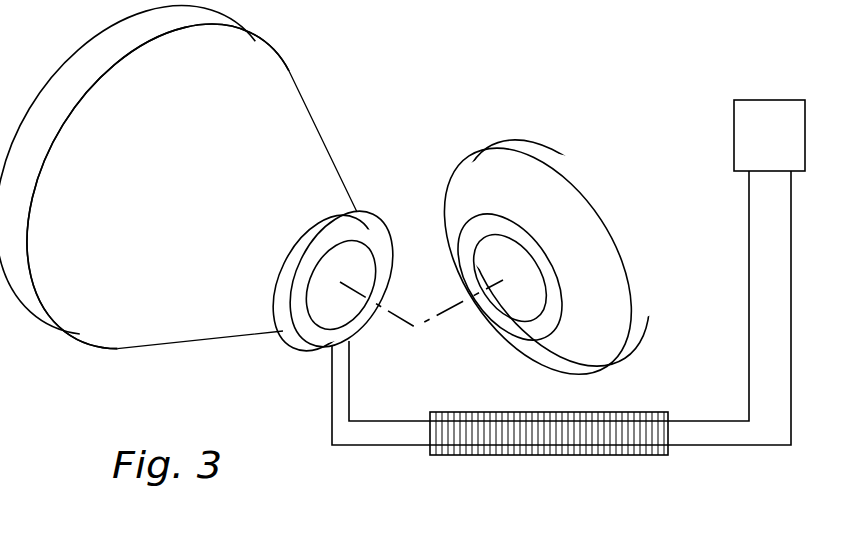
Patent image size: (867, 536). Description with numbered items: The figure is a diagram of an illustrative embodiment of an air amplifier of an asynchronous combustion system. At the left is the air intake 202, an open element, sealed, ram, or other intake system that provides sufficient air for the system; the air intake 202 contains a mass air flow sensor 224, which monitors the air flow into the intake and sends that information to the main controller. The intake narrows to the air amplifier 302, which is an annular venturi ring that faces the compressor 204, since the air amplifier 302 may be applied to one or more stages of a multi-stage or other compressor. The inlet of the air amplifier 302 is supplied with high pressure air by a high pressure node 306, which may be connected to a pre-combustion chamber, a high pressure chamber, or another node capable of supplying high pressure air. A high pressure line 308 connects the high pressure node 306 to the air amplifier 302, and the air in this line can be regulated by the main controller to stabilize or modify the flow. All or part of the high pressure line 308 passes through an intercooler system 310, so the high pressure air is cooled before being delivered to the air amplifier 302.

The air intake 202 is at (178, 345).
The mass air flow sensor 224 is at (60, 308).
The air amplifier 302 is at (360, 212).
The compressor 204 is at (473, 174).
The high pressure node 306 is at (765, 100).
The high pressure line 308 is at (748, 224).
The intercooler system 310 is at (517, 458).